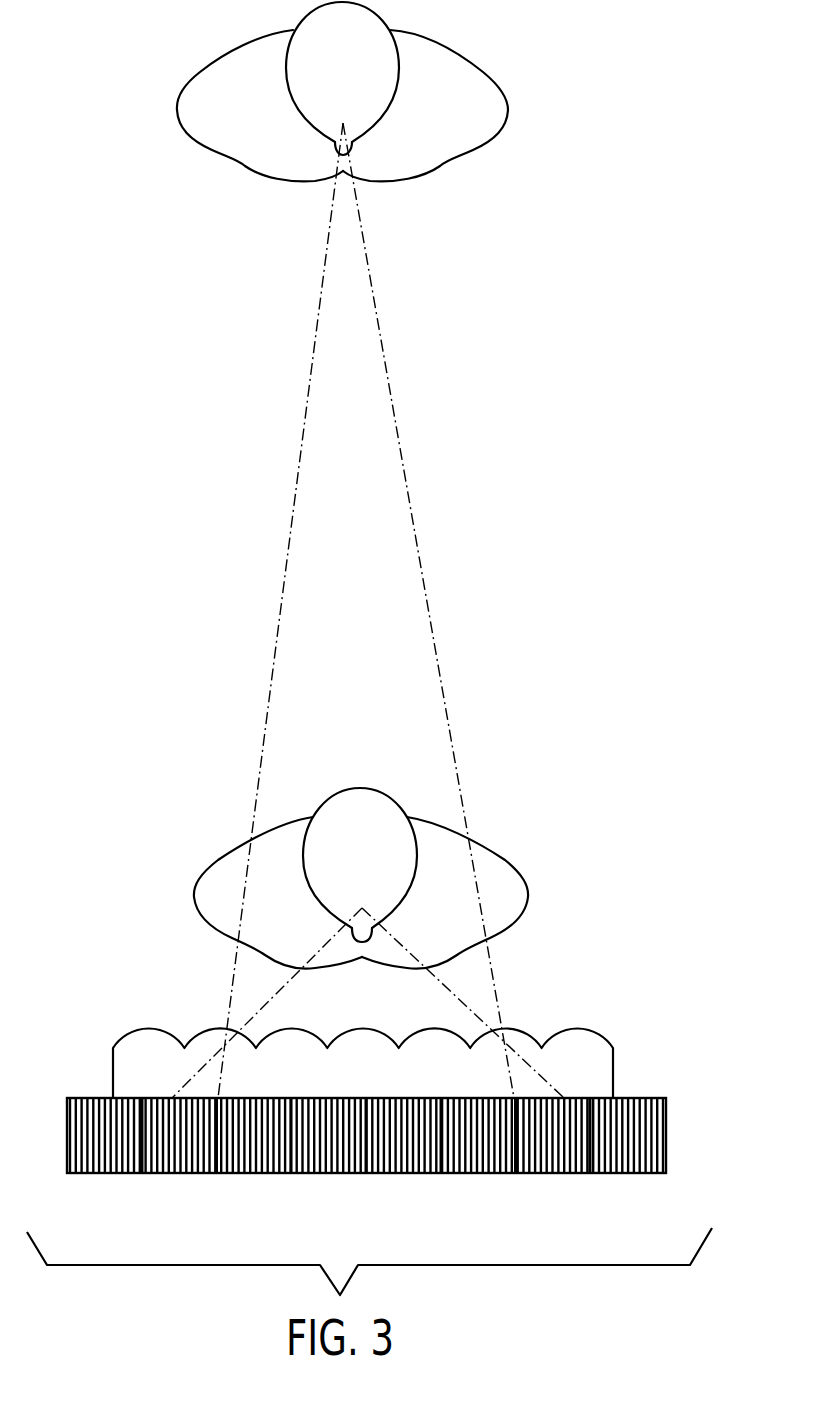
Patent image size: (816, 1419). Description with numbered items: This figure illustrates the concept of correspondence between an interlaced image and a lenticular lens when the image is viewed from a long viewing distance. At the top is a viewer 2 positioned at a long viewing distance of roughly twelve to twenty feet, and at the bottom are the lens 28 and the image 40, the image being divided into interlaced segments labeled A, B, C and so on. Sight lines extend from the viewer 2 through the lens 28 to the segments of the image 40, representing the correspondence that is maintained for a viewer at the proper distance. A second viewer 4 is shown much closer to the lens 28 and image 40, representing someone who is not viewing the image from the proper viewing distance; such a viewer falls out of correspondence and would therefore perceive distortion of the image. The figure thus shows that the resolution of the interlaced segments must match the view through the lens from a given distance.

The viewer 2 is at (485, 98).
The second viewer 4 is at (498, 880).
The lens 28 is at (577, 1047).
The image 40 is at (677, 1121).